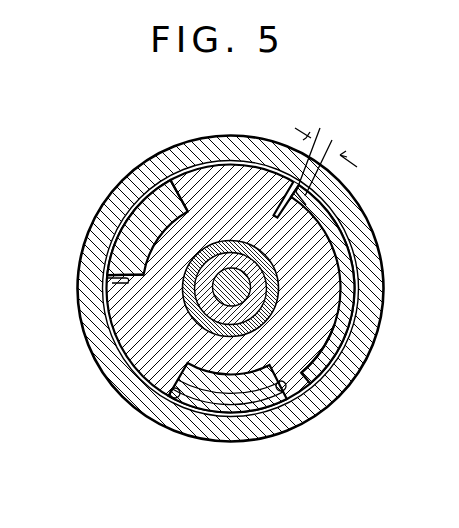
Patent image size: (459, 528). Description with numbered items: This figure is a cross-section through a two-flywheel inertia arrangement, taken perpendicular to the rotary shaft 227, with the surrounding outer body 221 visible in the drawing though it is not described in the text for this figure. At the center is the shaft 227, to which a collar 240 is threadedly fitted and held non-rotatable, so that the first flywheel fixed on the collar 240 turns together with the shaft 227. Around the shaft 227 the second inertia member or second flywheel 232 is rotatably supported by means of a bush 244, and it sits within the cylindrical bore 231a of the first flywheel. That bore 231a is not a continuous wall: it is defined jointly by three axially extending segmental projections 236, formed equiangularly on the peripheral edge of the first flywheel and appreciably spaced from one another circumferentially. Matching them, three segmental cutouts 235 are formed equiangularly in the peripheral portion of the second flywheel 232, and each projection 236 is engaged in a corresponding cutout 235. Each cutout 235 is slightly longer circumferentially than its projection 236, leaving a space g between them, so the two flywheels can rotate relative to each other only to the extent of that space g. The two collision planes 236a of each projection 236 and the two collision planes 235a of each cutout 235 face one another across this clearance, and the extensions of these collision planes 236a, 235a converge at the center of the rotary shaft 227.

The housing 221 is at (126, 186).
The rotary shaft 227 is at (200, 317).
The cylindrical bore 231a is at (205, 397).
The second inertia member or second flywheel 232 is at (248, 197).
The segmental cutouts 235 is at (300, 197).
The collision planes of the cutouts 235a is at (305, 380).
The segmental projections 236 is at (120, 220).
The collision planes of the projections 236a is at (187, 211).
The collar 240 is at (265, 292).
The bush 244 is at (335, 342).
The space g is at (326, 157).